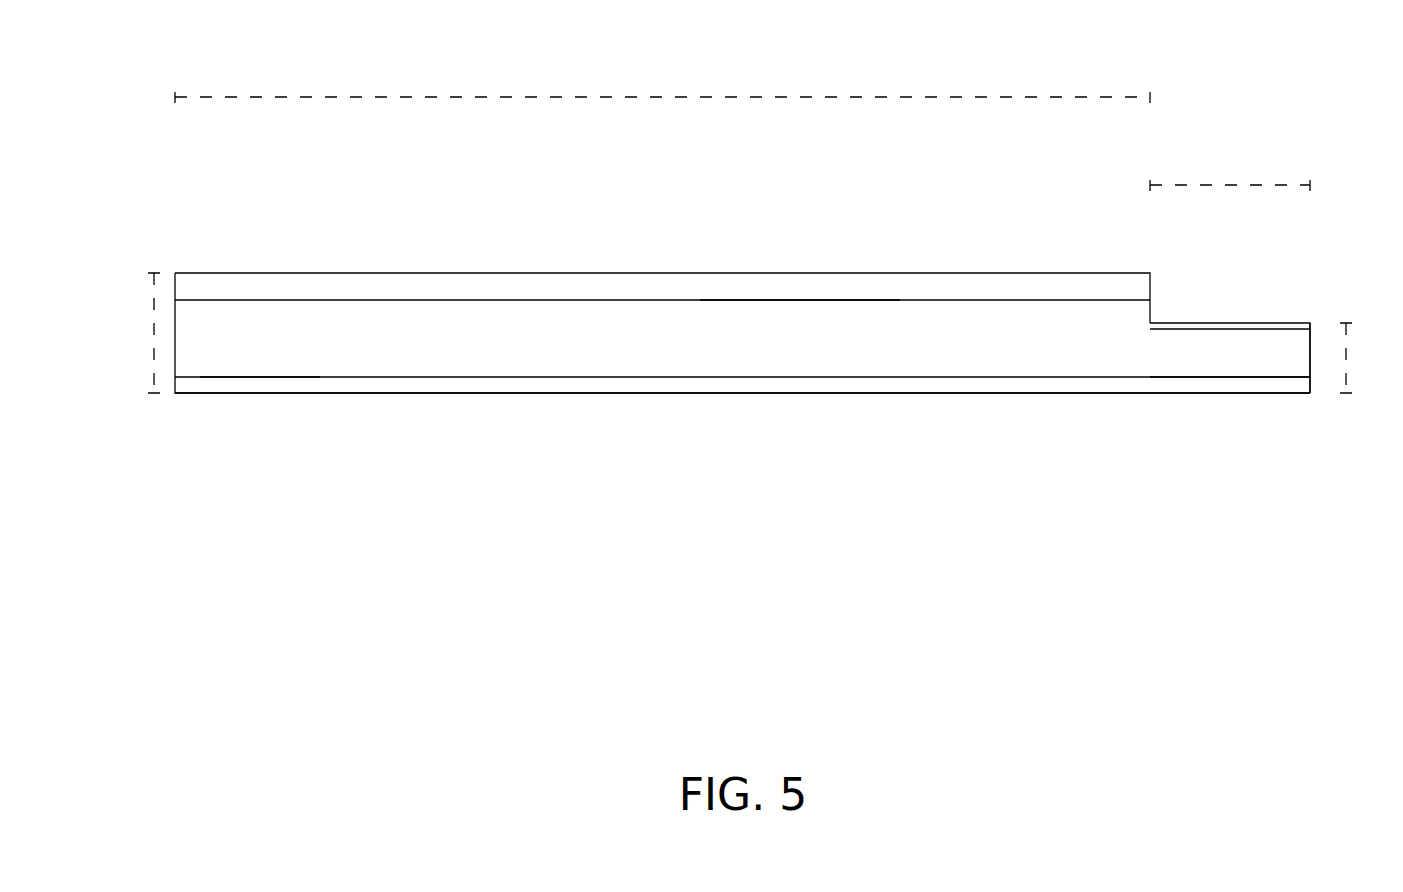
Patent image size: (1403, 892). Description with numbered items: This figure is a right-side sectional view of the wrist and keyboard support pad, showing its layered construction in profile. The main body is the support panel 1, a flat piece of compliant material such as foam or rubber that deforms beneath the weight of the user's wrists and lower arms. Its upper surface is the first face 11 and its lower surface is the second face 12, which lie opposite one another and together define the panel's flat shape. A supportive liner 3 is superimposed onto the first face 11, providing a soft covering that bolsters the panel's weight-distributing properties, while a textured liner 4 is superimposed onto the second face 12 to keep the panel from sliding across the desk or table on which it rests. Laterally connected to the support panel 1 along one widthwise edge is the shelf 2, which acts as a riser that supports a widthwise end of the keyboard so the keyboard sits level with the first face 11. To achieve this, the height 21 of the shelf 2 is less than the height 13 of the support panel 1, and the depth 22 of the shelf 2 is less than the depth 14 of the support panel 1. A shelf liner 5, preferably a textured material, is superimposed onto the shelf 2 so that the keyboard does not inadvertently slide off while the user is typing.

The support panel 1 is at (566, 362).
The shelf 2 is at (1244, 367).
The supportive liner 3 is at (740, 282).
The textured liner 4 is at (797, 387).
The shelf liner 5 is at (1238, 325).
The first face 11 is at (810, 301).
The second face 12 is at (246, 377).
The height of the support panel 13 is at (133, 333).
The depth of the support panel 14 is at (662, 81).
The height of the shelf 21 is at (1367, 358).
The depth of the shelf 22 is at (1230, 168).